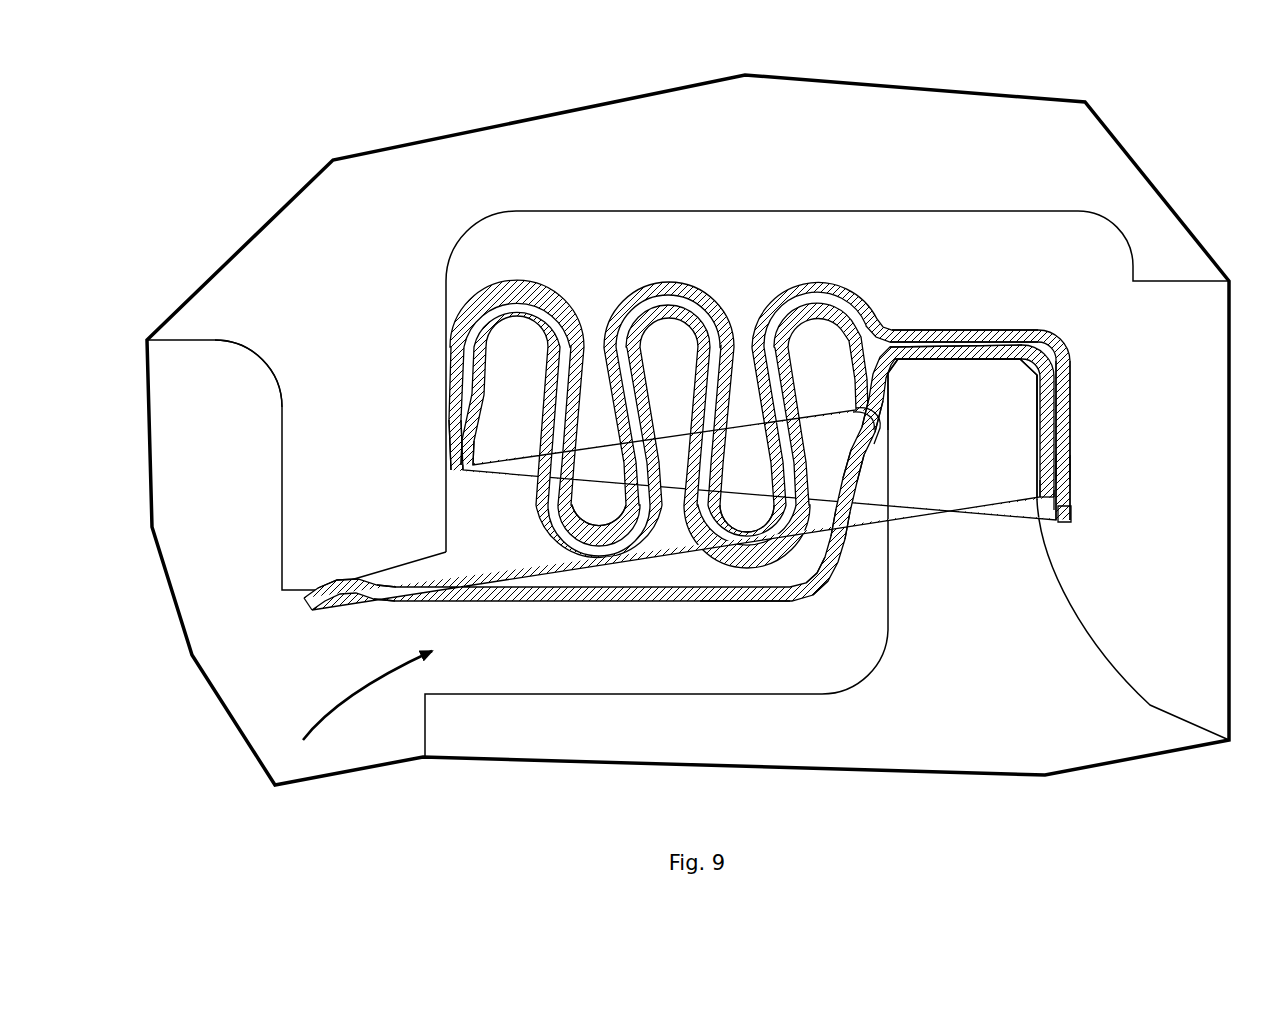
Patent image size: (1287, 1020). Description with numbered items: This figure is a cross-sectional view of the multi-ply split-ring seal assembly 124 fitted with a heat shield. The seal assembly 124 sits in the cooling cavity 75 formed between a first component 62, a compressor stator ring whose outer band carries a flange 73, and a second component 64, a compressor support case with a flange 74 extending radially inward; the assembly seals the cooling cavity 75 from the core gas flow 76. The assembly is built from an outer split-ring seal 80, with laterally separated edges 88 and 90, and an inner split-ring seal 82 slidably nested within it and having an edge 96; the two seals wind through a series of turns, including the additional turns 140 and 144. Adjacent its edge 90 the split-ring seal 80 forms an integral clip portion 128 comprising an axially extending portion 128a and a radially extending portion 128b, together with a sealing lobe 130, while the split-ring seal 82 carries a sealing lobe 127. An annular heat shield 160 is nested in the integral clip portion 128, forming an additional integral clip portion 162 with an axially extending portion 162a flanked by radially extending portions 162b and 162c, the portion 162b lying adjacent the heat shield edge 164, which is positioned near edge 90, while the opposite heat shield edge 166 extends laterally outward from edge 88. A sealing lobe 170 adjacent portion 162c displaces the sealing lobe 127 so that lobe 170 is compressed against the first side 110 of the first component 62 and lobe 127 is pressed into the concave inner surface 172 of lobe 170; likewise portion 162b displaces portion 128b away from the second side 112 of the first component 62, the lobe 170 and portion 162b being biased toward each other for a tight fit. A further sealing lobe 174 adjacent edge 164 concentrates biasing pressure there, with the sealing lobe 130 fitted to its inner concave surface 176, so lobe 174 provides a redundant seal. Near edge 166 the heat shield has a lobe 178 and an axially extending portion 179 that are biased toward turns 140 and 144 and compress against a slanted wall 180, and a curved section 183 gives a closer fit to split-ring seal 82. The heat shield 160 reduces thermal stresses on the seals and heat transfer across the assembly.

The first component 62 is at (956, 702).
The second component 64 is at (357, 317).
The flange 73 is at (1012, 421).
The flange 74 is at (345, 390).
The cooling cavity 75 is at (860, 260).
The core gas flow 76 is at (342, 700).
The split-ring seal 80 is at (702, 286).
The split-ring seal 82 is at (686, 338).
The edge 88 is at (467, 472).
The edge 90 is at (1067, 522).
The edge 96 is at (475, 463).
The first side 110 is at (883, 535).
The second side 112 is at (1047, 562).
The seal assembly 124 is at (776, 226).
The sealing lobe 127 is at (880, 415).
The integral clip portion 128 is at (990, 324).
The axially extending portion 128a is at (949, 325).
The radially extending portion 128b is at (1052, 438).
The sealing lobe 130 is at (1062, 465).
The additional turn 140 is at (592, 565).
The additional turn 144 is at (742, 565).
The annular heat shield 160 is at (759, 615).
The integral clip portion 162 is at (957, 366).
The axially extending portion 162a is at (988, 360).
The radially extending portion 162b is at (1043, 430).
The radially extending portion 162c is at (886, 420).
The edge 164 is at (1050, 528).
The edge 166 is at (305, 600).
The sealing lobe 170 is at (896, 456).
The concave inner surface 172 is at (868, 447).
The sealing lobe 174 is at (1034, 494).
The inner concave surface 176 is at (1062, 503).
The lobe 178 is at (330, 585).
The axially extending portion 179 is at (672, 601).
The wall 180 is at (390, 568).
The curved section 183 is at (820, 601).